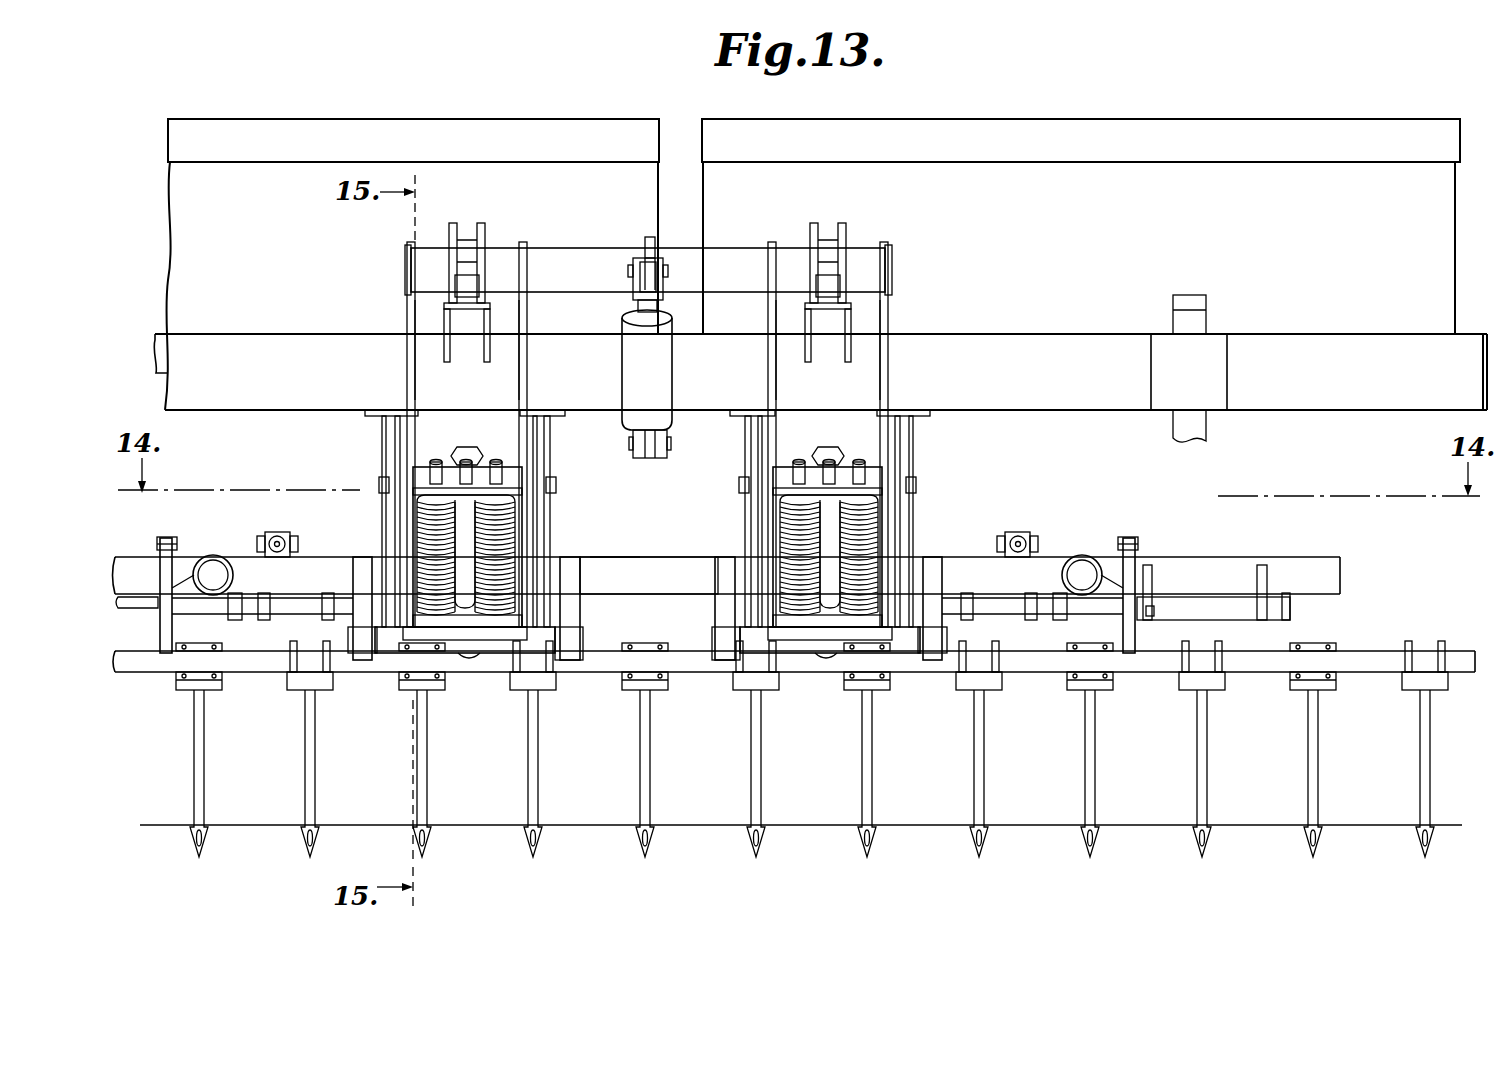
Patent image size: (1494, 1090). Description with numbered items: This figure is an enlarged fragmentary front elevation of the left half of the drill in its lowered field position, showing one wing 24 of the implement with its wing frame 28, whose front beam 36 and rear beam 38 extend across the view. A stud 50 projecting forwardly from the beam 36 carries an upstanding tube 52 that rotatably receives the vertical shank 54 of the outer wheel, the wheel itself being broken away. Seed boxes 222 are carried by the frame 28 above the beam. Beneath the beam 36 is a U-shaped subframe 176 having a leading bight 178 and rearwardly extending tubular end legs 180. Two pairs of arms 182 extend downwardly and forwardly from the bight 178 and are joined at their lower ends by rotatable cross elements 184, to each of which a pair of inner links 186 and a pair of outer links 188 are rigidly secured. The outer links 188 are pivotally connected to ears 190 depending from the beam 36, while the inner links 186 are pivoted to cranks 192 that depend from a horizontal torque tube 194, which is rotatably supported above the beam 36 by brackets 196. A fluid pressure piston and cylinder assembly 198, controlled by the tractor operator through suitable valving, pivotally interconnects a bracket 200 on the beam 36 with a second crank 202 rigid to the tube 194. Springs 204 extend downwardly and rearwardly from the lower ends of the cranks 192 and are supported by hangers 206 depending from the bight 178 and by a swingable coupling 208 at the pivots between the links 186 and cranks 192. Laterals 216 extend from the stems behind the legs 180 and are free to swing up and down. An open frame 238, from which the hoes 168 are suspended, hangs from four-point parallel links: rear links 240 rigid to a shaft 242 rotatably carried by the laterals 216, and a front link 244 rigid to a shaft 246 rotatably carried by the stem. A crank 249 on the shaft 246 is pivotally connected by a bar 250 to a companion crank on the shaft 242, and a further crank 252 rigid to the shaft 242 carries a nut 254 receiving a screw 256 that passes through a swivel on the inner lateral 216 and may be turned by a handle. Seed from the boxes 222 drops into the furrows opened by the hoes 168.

The wing 24 is at (1183, 96).
The wing frame 28 is at (1006, 330).
The front beam 36 is at (1064, 411).
The rear beam 38 is at (158, 342).
The stud 50 is at (1222, 366).
The tube 52 is at (1208, 436).
The vertical shank 54 is at (1190, 295).
The hoe 168 is at (539, 795).
The U-shaped subframe 176 is at (616, 552).
The leading bight 178 is at (635, 567).
The end leg 180 is at (213, 554).
The arm 182 is at (353, 580).
The cross element 184 is at (447, 645).
The inner link 186 is at (400, 502).
The outer link 188 is at (385, 522).
The ear 190 is at (405, 432).
The crank 192 is at (518, 374).
The torque tube 194 is at (728, 250).
The bracket 196 is at (484, 223).
The piston and cylinder assembly 198 is at (614, 384).
The bracket 200 is at (652, 459).
The second crank 202 is at (645, 243).
The spring 204 is at (495, 540).
The hanger 206 is at (400, 661).
The swingable coupling 208 is at (424, 466).
The lateral 216 is at (131, 558).
The seed box 222 is at (357, 119).
The open frame 238 is at (240, 682).
The rear link 240 is at (1290, 616).
The shaft 242 is at (268, 610).
The front link 244 is at (162, 646).
The shaft 246 is at (162, 578).
The crank 249 is at (160, 540).
The bar 250 is at (173, 538).
The crank 252 is at (264, 534).
The nut 254 is at (292, 535).
The screw 256 is at (270, 556).